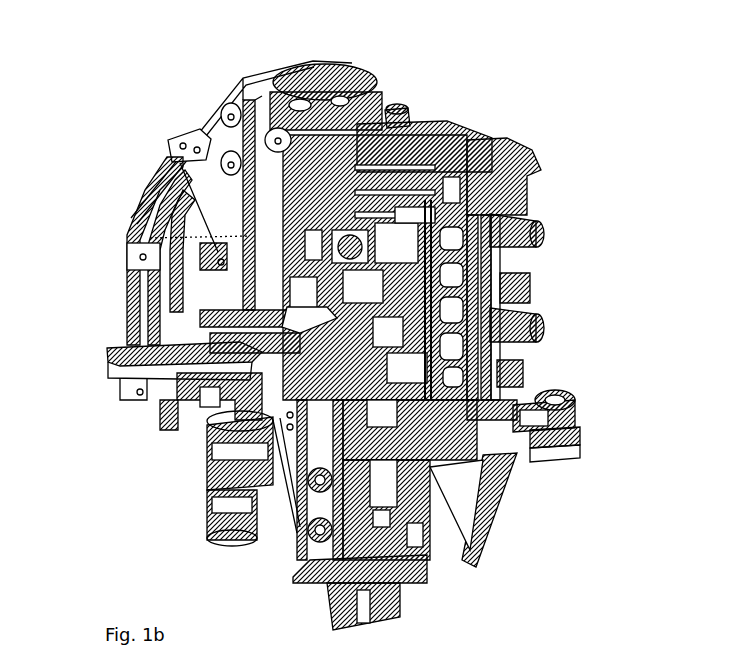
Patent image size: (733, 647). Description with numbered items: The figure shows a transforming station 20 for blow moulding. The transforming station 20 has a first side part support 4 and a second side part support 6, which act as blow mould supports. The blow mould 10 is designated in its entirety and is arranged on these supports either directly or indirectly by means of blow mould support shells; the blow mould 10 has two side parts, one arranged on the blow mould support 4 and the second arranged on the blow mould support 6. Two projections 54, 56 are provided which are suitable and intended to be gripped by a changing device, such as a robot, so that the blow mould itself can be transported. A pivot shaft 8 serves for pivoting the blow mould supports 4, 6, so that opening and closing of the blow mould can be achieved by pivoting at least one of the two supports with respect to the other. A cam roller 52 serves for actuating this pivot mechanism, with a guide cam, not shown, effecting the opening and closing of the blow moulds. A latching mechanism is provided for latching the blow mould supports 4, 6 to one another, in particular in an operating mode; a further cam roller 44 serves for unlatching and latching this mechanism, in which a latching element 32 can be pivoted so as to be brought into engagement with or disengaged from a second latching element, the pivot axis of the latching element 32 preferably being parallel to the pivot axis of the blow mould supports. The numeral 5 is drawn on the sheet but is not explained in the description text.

The first side part support 4 is at (122, 233).
The processing station column 5 is at (446, 119).
The second side part support 6 is at (498, 160).
The pivot shaft 8 is at (292, 62).
The blow mould 10 is at (485, 300).
The transforming station 20 is at (83, 443).
The latching element 32 is at (502, 266).
The further cam roller 44 is at (550, 447).
The cam roller 52 is at (210, 525).
The projection 54 is at (350, 80).
The projection 56 is at (396, 118).